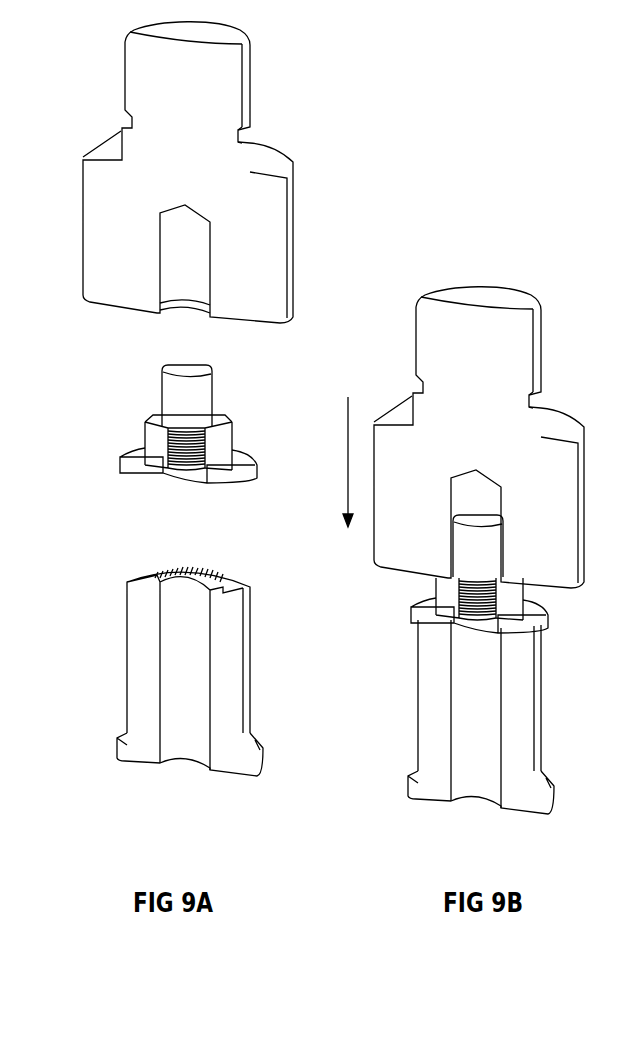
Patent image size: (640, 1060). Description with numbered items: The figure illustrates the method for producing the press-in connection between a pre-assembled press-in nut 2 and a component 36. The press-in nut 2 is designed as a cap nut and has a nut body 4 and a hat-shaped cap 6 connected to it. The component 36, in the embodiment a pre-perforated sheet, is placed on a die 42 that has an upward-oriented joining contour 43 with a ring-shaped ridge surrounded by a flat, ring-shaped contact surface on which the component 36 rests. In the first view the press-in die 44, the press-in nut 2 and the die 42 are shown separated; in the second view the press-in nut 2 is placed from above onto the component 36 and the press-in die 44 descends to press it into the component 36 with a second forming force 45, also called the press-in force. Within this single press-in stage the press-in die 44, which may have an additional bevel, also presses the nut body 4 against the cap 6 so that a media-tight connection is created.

In FIG. 9A, the press-in nut 2 is at (236, 408).
In FIG. 9B, the nut body 4 is at (442, 592).
In FIG. 9B, the cap 6 is at (485, 557).
In FIG. 9A, the component 36 is at (128, 467).
In FIG. 9B, the component 36 is at (542, 617).
In FIG. 9A, the die 42 is at (139, 671).
In FIG. 9B, the die 42 is at (433, 682).
In FIG. 9A, the joining contour 43 is at (153, 575).
In FIG. 9A, the press-in die 44 is at (268, 233).
In FIG. 9B, the press-in die 44 is at (513, 362).
In FIG. 9B, the second forming force 45 is at (347, 470).